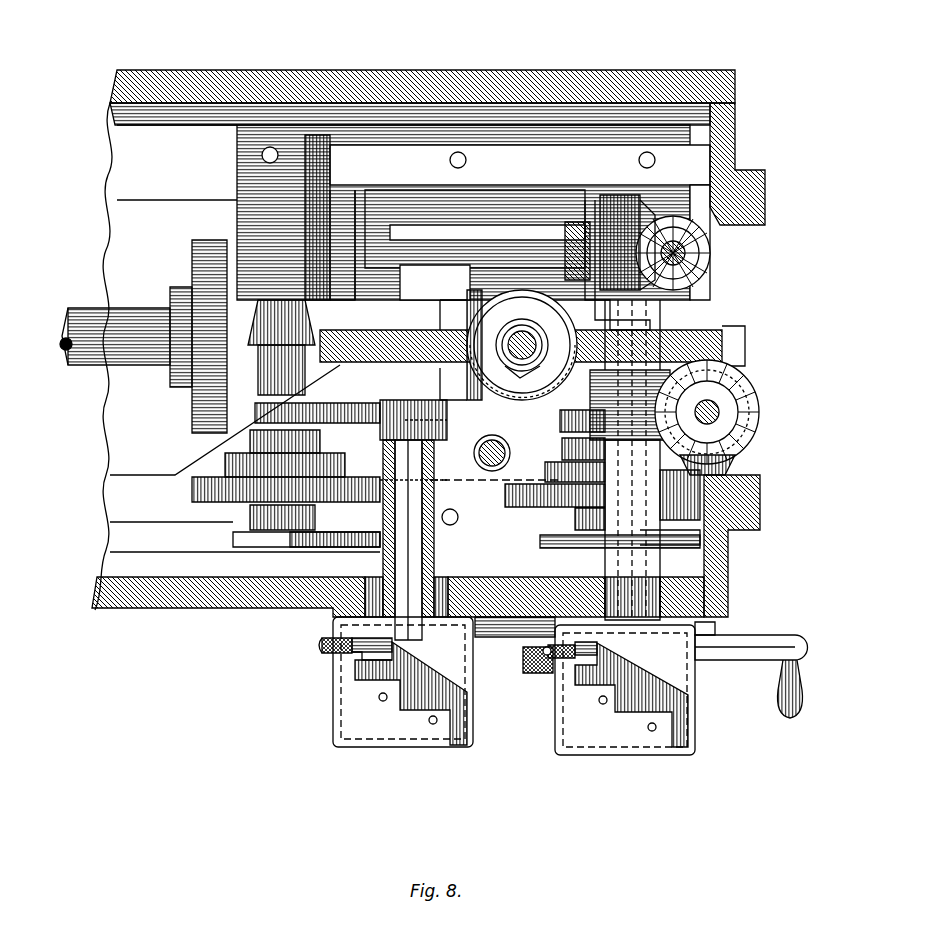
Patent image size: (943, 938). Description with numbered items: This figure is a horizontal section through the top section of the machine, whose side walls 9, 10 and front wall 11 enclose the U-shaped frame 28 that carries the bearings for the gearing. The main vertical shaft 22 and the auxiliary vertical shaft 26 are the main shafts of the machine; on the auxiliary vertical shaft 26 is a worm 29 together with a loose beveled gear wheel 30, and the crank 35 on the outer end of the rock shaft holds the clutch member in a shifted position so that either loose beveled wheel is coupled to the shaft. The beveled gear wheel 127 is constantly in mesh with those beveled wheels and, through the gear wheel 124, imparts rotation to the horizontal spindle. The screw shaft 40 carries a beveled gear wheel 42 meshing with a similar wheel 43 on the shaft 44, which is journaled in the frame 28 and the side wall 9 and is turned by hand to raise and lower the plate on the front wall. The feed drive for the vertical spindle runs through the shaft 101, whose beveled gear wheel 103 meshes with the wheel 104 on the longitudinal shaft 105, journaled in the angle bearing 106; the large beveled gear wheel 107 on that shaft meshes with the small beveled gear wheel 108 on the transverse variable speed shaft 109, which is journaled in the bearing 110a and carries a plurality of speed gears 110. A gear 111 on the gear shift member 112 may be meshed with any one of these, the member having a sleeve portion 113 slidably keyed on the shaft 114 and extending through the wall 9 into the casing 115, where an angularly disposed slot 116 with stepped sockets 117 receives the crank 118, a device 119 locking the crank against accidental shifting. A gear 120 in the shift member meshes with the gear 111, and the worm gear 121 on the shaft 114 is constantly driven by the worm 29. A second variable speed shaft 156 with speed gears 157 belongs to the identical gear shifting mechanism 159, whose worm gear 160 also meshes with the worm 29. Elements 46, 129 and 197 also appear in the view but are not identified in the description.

The side wall 9 is at (236, 600).
The side wall 10 is at (125, 78).
The front wall 11 is at (730, 553).
The main vertical shaft 22 is at (500, 450).
The auxiliary vertical shaft 26 is at (520, 330).
The U-shaped frame 28 is at (555, 183).
The worm 29 is at (548, 385).
The beveled gear wheel 30 is at (512, 392).
The crank 35 is at (518, 636).
The screw shaft 40 is at (720, 406).
The beveled gear wheel 42 is at (759, 420).
The beveled gear wheel 43 is at (737, 455).
The shaft 44 is at (718, 624).
The crank handle 46 is at (750, 660).
The shaft 101 is at (685, 250).
The beveled gear wheel 103 is at (735, 178).
The beveled gear wheel 104 is at (630, 210).
The longitudinal shaft 105 is at (478, 230).
The angle bearing 106 is at (365, 185).
The large beveled gear wheel 107 is at (320, 130).
The small beveled gear wheel 108 is at (272, 300).
The transverse variable speed shaft 109 is at (278, 548).
The speed gears 110 is at (195, 503).
The bearing 110a is at (275, 370).
The gear 111 is at (330, 424).
The gear shift member 112 is at (425, 436).
The sleeve portion 113 is at (447, 490).
The shaft 114 is at (395, 522).
The casing 115 is at (352, 730).
The angularly disposed slot 116 is at (460, 680).
The stepped sockets 117 is at (390, 708).
The crank 118 is at (360, 652).
The locking device 119 is at (322, 646).
The gear 120 is at (447, 421).
The worm gear 121 is at (225, 430).
The gear wheel 124 is at (192, 422).
The beveled gear wheel 127 is at (470, 300).
The drive shaft 129 is at (75, 366).
The transverse variable speed shaft 156 is at (600, 302).
The speed gears 157 is at (530, 500).
The gear shifting mechanism 159 is at (612, 460).
The worm gear 160 is at (700, 352).
The bushing 197 is at (563, 230).